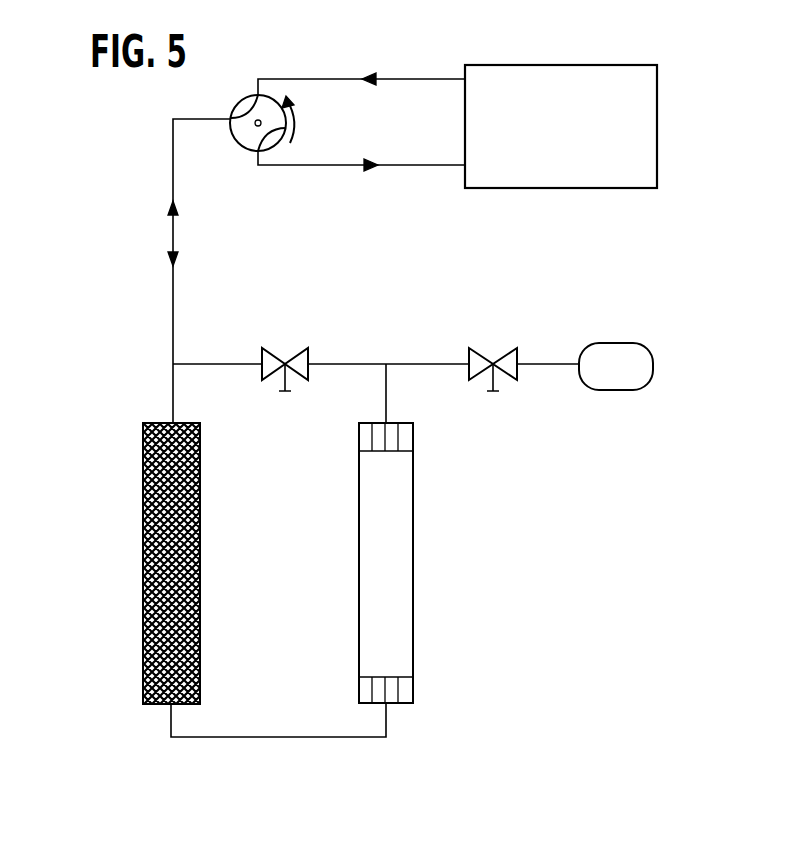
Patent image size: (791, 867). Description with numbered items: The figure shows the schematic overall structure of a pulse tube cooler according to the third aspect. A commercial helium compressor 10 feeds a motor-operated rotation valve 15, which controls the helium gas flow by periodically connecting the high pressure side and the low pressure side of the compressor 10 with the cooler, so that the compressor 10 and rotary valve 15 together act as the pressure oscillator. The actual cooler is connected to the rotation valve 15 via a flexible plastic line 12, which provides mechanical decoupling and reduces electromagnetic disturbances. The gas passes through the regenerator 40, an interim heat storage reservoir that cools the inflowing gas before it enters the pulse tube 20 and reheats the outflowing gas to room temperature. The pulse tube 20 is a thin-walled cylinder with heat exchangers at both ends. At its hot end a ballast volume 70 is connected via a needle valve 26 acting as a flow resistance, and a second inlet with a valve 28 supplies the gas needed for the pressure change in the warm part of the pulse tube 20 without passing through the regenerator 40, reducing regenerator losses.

The compressor 10 is at (529, 190).
The flexible plastic line 12 is at (173, 236).
The rotary valve 15 is at (246, 153).
The pulse tube 20 is at (419, 604).
The needle valve 26 is at (496, 395).
The valve 28 is at (287, 398).
The regenerator 40 is at (131, 603).
The ballast volume 70 is at (617, 392).